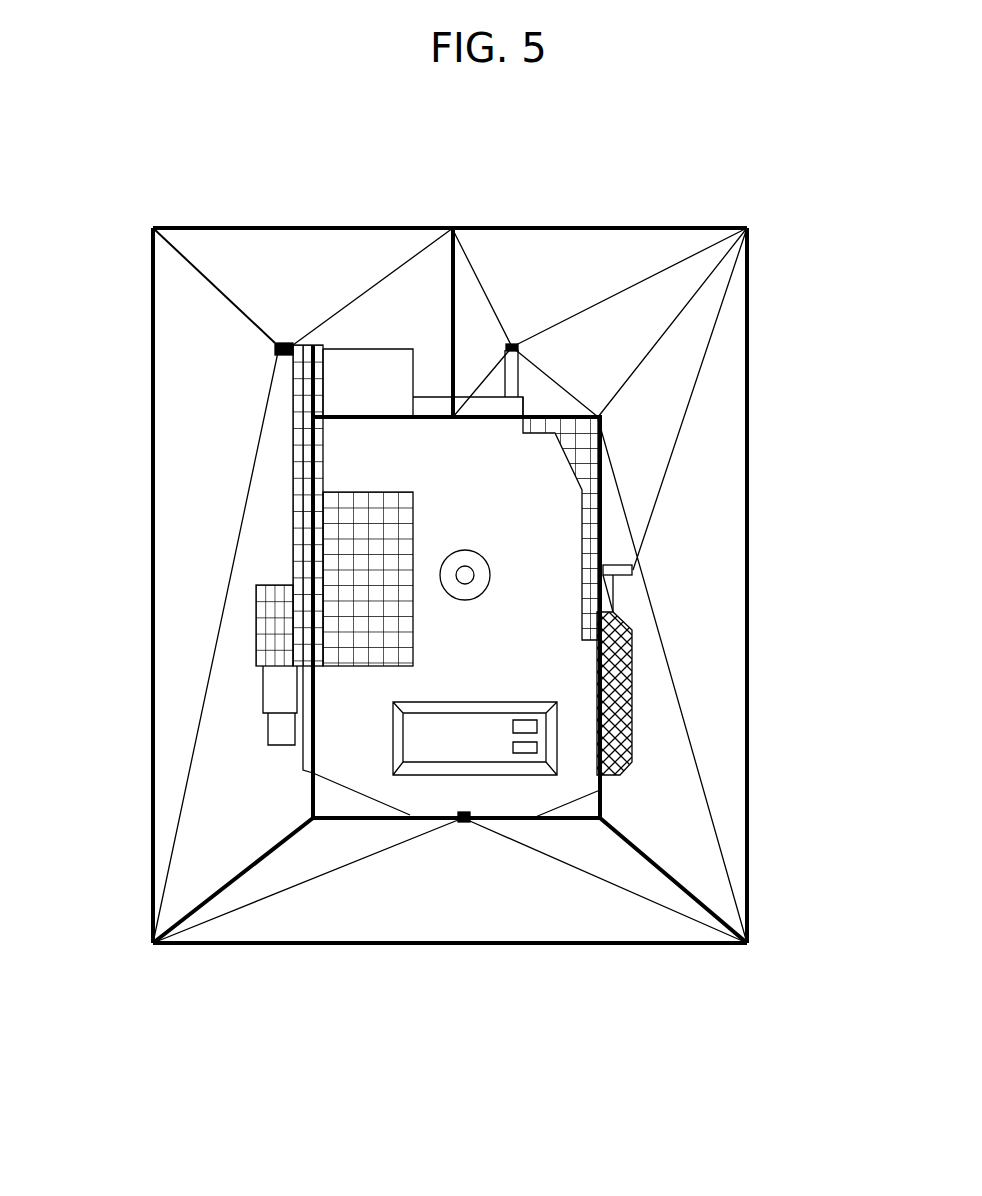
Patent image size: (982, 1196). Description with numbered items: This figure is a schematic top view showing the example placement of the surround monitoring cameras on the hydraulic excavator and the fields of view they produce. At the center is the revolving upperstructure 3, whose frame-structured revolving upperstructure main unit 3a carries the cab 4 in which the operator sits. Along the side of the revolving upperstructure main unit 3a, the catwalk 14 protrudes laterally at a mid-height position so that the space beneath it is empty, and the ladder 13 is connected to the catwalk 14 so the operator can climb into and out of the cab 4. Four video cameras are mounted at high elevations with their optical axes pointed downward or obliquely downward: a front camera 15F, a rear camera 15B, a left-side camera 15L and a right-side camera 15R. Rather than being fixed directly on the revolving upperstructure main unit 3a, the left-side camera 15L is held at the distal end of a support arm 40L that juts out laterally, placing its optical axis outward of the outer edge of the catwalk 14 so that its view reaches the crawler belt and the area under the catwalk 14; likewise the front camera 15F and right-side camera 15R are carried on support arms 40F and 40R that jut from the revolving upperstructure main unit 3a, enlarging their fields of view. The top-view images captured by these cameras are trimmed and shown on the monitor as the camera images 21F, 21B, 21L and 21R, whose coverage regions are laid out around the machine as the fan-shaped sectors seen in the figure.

The revolving upperstructure 3 is at (532, 828).
The revolving upperstructure main unit 3a is at (543, 480).
The cab 4 is at (378, 375).
The ladder 13 is at (263, 705).
The catwalk 14 is at (303, 443).
The left-side camera 15L is at (275, 345).
The front camera 15F is at (512, 345).
The right-side camera 15R is at (633, 572).
The rear camera 15B is at (463, 823).
The left camera image 21L is at (170, 540).
The front camera image 21F is at (679, 240).
The right camera image 21R is at (735, 585).
The rear camera image 21B is at (598, 930).
The support arm 40L is at (313, 343).
The support arm 40F is at (537, 387).
The support arm 40R is at (613, 580).